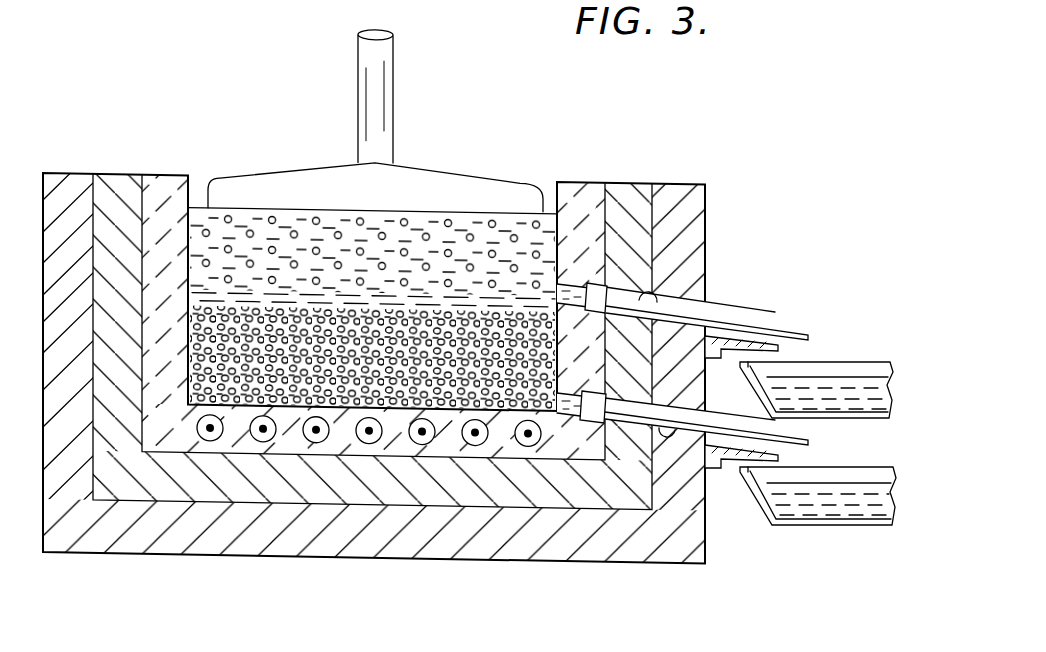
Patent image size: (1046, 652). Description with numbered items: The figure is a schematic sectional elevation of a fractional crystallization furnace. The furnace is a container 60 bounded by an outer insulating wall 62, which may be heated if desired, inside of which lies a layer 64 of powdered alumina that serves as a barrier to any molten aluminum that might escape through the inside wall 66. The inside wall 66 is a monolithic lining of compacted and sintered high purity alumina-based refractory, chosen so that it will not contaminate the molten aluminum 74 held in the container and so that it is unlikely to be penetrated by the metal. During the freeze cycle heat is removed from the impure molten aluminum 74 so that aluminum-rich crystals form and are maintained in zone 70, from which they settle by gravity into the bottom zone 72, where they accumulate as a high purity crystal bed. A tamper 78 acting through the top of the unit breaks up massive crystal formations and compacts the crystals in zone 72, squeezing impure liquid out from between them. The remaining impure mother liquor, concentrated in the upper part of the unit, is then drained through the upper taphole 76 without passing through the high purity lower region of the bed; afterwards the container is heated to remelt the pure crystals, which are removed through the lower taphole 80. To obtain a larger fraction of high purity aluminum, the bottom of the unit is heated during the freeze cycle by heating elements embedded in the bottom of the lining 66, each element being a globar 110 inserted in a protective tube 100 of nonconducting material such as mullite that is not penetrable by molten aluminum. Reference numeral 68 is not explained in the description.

The container 60 is at (112, 120).
The insulating wall 62 is at (67, 187).
The layer comprising powdered alumina 64 is at (122, 187).
The inside wall 66 is at (175, 187).
The molten upper layer 68 is at (250, 233).
The zone 70 is at (501, 233).
The zone 72 is at (396, 408).
The molten aluminum 74 is at (292, 233).
The taphole 76 is at (706, 275).
The tamper 78 is at (433, 178).
The lower taphole 80 is at (678, 435).
The tube of material 100 is at (470, 441).
The globar 110 is at (530, 441).